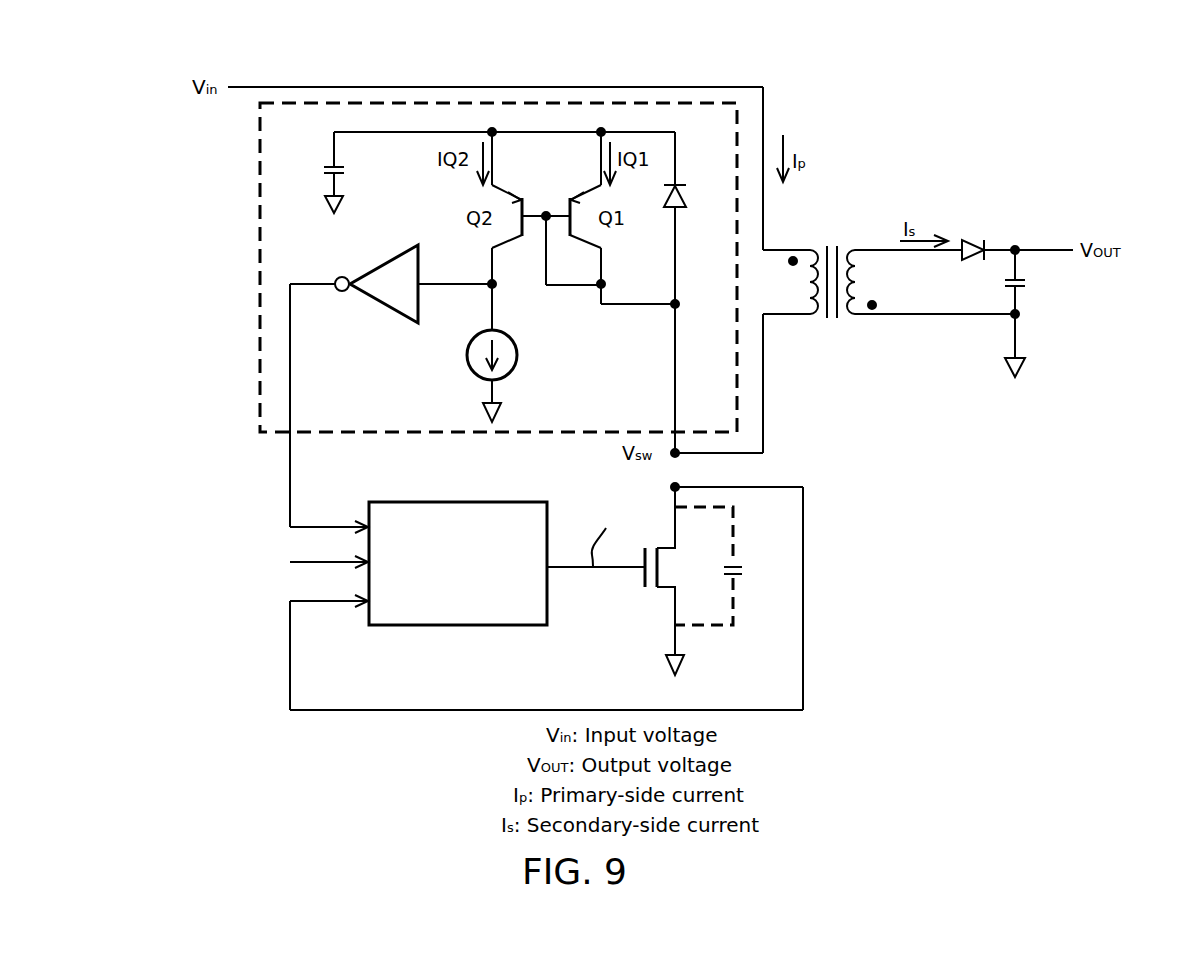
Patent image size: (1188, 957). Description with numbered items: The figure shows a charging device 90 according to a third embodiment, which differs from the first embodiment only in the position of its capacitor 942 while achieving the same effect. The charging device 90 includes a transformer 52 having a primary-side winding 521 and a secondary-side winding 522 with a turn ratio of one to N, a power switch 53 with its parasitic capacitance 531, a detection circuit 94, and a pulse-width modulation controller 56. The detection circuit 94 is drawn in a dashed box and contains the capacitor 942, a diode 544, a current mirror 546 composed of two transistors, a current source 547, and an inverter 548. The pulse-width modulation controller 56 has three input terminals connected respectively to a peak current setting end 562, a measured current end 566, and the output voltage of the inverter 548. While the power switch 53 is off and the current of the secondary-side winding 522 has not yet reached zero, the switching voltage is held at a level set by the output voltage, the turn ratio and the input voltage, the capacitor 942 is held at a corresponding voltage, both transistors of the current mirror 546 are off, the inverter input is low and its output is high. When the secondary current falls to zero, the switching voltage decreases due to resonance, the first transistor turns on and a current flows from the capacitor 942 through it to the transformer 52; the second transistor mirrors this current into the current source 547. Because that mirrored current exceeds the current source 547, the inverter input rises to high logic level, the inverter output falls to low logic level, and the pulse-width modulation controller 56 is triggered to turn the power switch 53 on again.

The charging device 90 is at (1073, 158).
The detection circuit 94 is at (260, 366).
The capacitor 942 is at (331, 172).
The inverter 548 is at (396, 259).
The current source 547 is at (468, 358).
The current mirror 546 is at (560, 302).
The diode 544 is at (684, 208).
The pulse-width modulation controller 56 is at (452, 626).
The peak current setting end 562 is at (318, 562).
The measured current end 566 is at (290, 648).
The power switch 53 is at (667, 590).
The parasitic capacitance 531 is at (730, 566).
The transformer 52 is at (889, 282).
The primary-side winding 521 is at (790, 282).
The secondary-side winding 522 is at (931, 282).